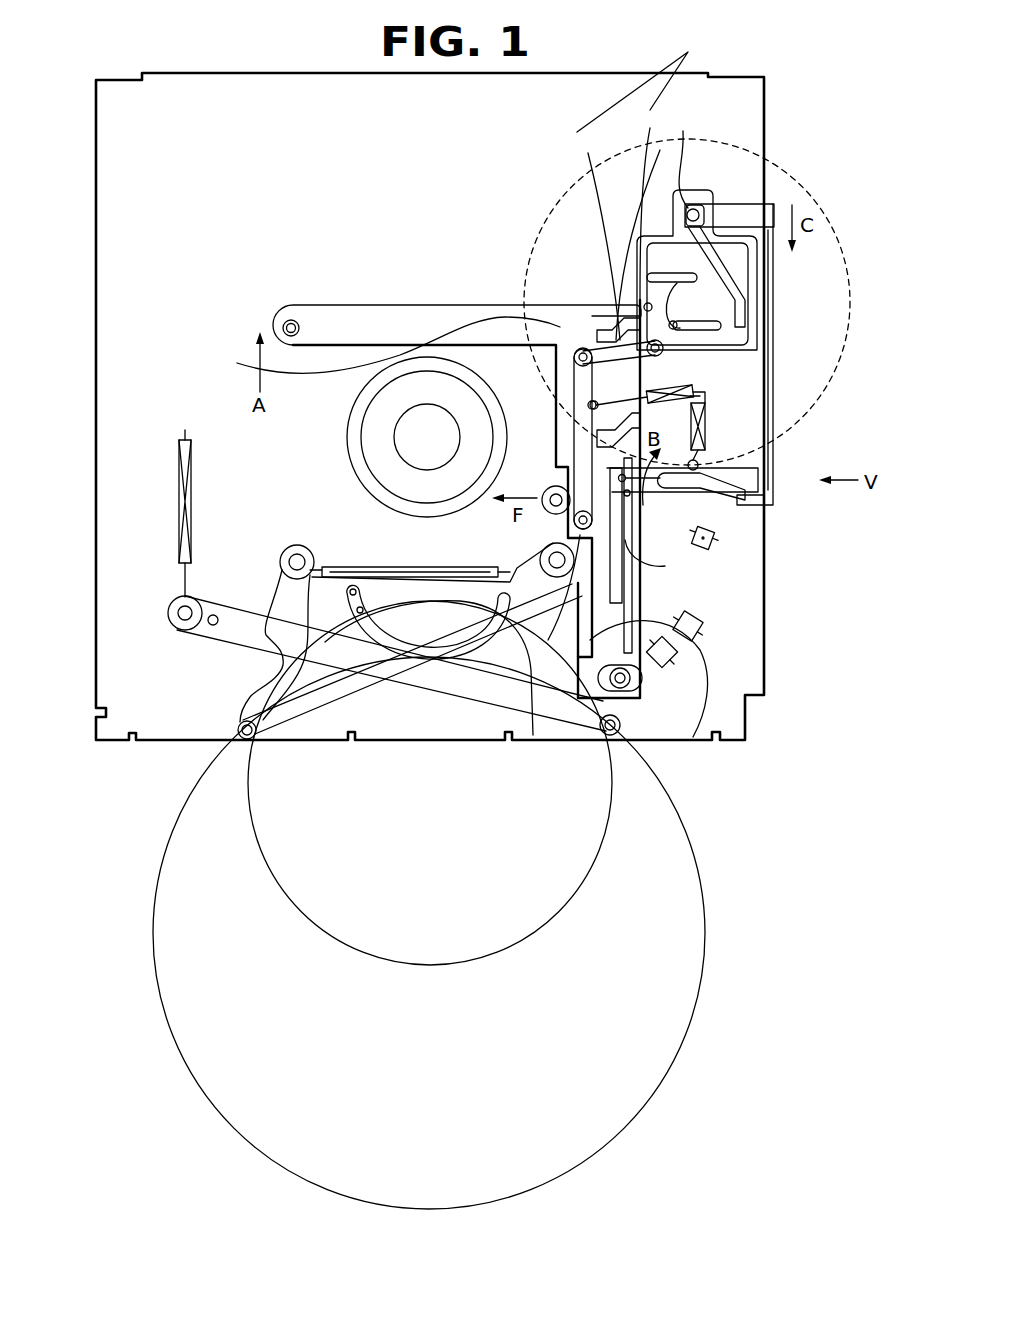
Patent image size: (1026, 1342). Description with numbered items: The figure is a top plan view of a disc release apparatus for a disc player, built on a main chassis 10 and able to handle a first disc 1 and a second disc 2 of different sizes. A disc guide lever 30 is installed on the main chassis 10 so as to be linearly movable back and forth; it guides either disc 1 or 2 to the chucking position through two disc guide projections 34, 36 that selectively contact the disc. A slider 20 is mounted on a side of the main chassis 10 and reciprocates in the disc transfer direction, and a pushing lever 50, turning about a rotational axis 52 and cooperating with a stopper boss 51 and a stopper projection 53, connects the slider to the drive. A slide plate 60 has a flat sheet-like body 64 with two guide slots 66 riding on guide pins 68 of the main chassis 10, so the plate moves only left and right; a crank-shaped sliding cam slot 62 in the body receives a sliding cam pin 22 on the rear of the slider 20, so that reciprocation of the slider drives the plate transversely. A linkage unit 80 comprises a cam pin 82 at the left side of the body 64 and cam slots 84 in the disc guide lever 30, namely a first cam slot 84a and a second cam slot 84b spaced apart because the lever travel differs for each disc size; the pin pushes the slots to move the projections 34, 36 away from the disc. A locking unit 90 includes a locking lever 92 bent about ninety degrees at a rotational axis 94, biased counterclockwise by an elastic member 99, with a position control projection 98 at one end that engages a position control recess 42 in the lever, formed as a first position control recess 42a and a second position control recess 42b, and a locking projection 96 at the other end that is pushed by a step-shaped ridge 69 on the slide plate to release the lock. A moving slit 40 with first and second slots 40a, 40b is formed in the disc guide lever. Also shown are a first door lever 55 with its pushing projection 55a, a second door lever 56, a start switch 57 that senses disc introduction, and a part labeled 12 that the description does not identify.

The first disc 1 is at (258, 851).
The second disc 2 is at (155, 900).
The main chassis 10 is at (92, 693).
The lock member 12 is at (703, 538).
The slider 20 is at (770, 455).
The sliding cam pin 22 is at (683, 159).
The disc guide lever 30 is at (336, 300).
The disc guide projection 34 is at (278, 321).
The disc guide projection 36 is at (385, 346).
The moving slit 40 is at (556, 470).
The first slot 40a is at (626, 502).
The second slot 40b is at (578, 598).
The position control recess 42 is at (690, 52).
The first position control recess 42a is at (673, 614).
The second position control recess 42b is at (697, 636).
The pushing lever 50 is at (726, 544).
The stopper boss 51 is at (748, 497).
The rotational axis of the pushing lever 52 is at (760, 478).
The stopper projection 53 is at (542, 500).
The first door lever 55 is at (530, 745).
The pushing projection 55a is at (665, 566).
The second door lever 56 is at (238, 697).
The start switch 57 is at (693, 737).
The slide plate 60 is at (793, 130).
The sliding cam slot 62 is at (740, 245).
The body 64 is at (698, 208).
The guide slots 66 is at (722, 332).
The guide pins 68 is at (735, 266).
The ridge 69 is at (645, 203).
The linkage unit 80 is at (845, 378).
The cam pin 82 is at (705, 355).
The cam slots 84 is at (822, 372).
The first cam slot 84a is at (690, 392).
The second cam slot 84b is at (706, 428).
The locking unit 90 is at (638, 81).
The locking lever 92 is at (610, 236).
The rotational axis 94 is at (583, 348).
The locking projection 96 is at (618, 320).
The position control projection 98 is at (600, 334).
The elastic member 99 is at (600, 428).